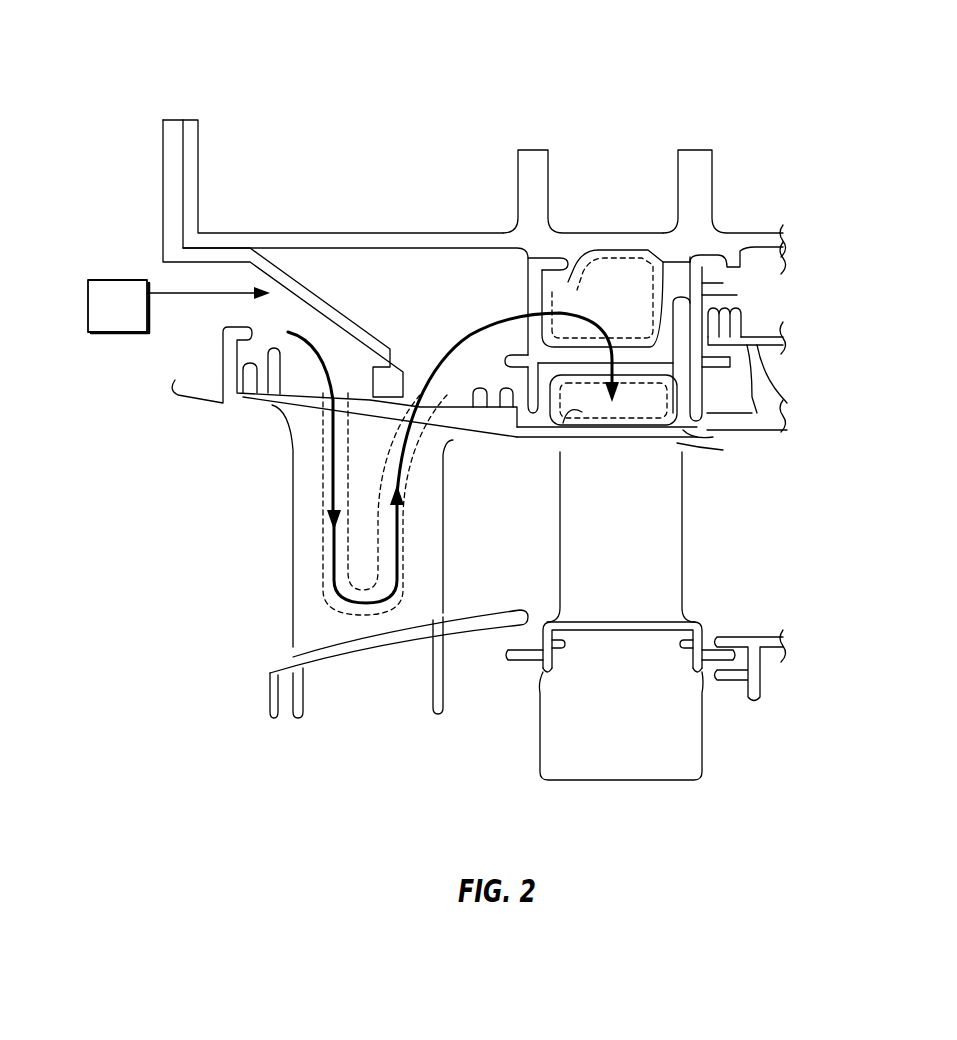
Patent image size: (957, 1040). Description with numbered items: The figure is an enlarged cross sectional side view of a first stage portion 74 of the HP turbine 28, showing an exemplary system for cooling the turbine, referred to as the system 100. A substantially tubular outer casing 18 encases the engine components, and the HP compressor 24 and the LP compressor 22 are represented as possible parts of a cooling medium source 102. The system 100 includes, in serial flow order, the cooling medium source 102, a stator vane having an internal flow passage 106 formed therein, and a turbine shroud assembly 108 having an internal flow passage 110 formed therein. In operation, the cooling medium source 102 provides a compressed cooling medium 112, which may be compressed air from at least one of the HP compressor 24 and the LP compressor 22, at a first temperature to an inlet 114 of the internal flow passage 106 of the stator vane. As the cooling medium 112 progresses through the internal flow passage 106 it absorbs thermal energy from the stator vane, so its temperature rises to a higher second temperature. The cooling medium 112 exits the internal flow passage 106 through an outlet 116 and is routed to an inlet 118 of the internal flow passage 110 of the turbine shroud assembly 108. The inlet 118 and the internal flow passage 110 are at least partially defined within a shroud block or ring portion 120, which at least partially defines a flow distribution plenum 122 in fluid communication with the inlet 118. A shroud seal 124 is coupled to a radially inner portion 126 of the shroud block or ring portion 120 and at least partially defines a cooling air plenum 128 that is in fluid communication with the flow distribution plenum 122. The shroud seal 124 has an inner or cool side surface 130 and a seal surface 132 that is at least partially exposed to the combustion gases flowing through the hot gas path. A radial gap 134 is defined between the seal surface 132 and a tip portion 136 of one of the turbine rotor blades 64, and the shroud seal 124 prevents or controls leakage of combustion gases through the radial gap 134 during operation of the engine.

The high pressure turbine 28 is at (562, 66).
The system for cooling a turbine engine 100 is at (353, 198).
The outer casing 18 is at (528, 163).
The internal flow passage 110 is at (641, 257).
The shroud block or ring portion 120 is at (690, 284).
The turbine shroud assembly 108 is at (718, 295).
The high pressure compressor 24 is at (100, 280).
The cooling medium source 102 is at (118, 306).
The low pressure compressor 22 is at (128, 333).
The cooling medium 112 is at (190, 294).
The inlet 114 is at (341, 405).
The inlet 118 is at (540, 312).
The outlet 116 is at (427, 440).
The internal flow passage 106 is at (325, 480).
The flow distribution plenum 122 is at (602, 298).
The cooling air plenum 128 is at (607, 394).
The radially inner portion 126 is at (553, 375).
The inner or cool side surface 130 is at (573, 404).
The seal surface 132 is at (532, 452).
The tip portion 136 is at (665, 462).
The shroud seal 124 is at (693, 433).
The radial gap 134 is at (682, 447).
The turbine rotor blades 64 is at (646, 616).
The first stage portion 74 is at (460, 748).